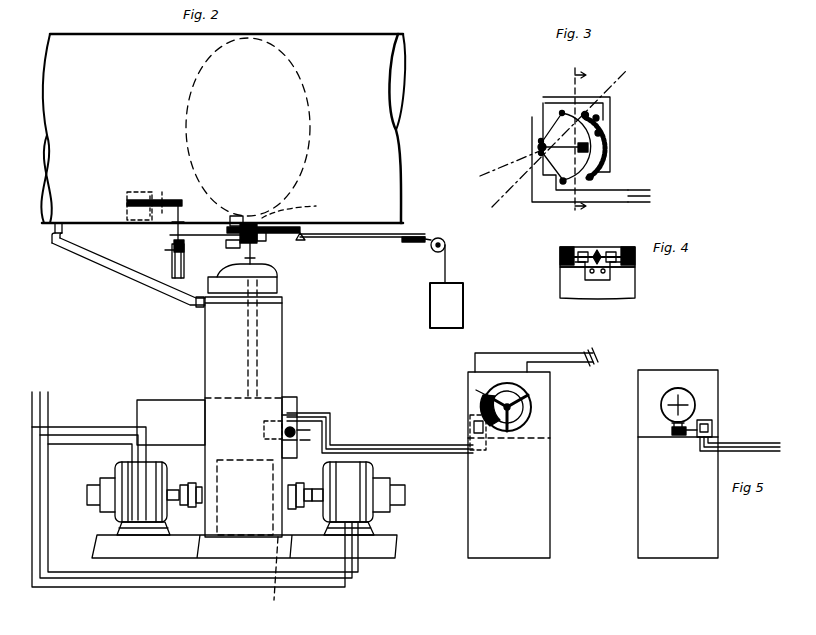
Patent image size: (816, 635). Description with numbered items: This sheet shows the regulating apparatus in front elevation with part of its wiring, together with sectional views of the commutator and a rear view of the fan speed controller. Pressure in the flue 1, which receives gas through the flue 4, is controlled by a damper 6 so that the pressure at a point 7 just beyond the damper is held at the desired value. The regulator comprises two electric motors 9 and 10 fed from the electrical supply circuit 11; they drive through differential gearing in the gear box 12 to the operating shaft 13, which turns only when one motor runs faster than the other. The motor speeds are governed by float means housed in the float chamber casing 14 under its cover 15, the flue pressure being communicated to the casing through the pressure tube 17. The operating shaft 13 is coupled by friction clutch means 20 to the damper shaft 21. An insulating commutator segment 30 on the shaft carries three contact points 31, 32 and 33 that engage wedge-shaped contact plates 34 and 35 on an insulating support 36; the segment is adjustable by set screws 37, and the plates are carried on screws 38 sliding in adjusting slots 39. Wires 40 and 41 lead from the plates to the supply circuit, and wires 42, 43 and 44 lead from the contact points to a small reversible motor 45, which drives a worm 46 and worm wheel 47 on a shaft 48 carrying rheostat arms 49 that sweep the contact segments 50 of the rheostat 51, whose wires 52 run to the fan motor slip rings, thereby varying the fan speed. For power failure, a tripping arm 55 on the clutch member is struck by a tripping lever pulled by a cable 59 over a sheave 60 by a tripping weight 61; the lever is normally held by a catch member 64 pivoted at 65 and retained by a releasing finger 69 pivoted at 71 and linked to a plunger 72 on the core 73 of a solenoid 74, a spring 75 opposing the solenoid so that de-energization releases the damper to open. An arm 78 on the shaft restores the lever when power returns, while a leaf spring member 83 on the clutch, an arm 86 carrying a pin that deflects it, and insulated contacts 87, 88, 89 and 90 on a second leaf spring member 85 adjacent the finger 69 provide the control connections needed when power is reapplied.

In FIG. 2, the flue 1 is at (55, 92).
In FIG. 3, the flue 4 is at (578, 138).
In FIG. 2, the damper 6 is at (303, 170).
In FIG. 2, the point 7 is at (55, 232).
In FIG. 2, the electric motor 9 is at (118, 475).
In FIG. 2, the electric motor 10 is at (376, 468).
In FIG. 2, the electrical supply circuit 11 is at (30, 408).
In FIG. 2, the gear box 12 is at (253, 537).
In FIG. 2, the operating shaft 13 is at (256, 257).
In FIG. 3, the operating shaft 13 is at (538, 146).
In FIG. 2, the float chamber casing 14 is at (283, 378).
In FIG. 2, the cover 15 is at (286, 286).
In FIG. 2, the pressure tube 17 is at (118, 270).
In FIG. 2, the friction clutch means 20 is at (266, 241).
In FIG. 2, the damper shaft 21 is at (299, 208).
In FIG. 3, the commutator segment 30 is at (545, 152).
In FIG. 4, the commutator segment 30 is at (604, 250).
In FIG. 3, the contact member 31 is at (560, 112).
In FIG. 3, the contact member 32 is at (568, 146).
In FIG. 4, the contact member 32 is at (595, 250).
In FIG. 3, the contact member 33 is at (563, 185).
In FIG. 3, the contact member 34 is at (586, 112).
In FIG. 4, the contact member 34 is at (560, 283).
In FIG. 3, the contact member 35 is at (594, 177).
In FIG. 4, the contact member 35 is at (620, 272).
In FIG. 2, the insulating support 36 is at (300, 413).
In FIG. 3, the insulating support 36 is at (600, 149).
In FIG. 4, the insulating support 36 is at (622, 284).
In FIG. 3, the set screws 37 is at (540, 142).
In FIG. 2, the screws 38 is at (292, 430).
In FIG. 3, the screws 38 is at (600, 117).
In FIG. 3, the adjusting slots 39 is at (600, 133).
In FIG. 4, the adjusting slots 39 is at (562, 248).
In FIG. 2, the wire 40 is at (212, 396).
In FIG. 3, the wire 40 is at (545, 100).
In FIG. 2, the wire 41 is at (180, 445).
In FIG. 3, the wire 41 is at (548, 97).
In FIG. 2, the wire 42 is at (400, 453).
In FIG. 3, the wire 42 is at (652, 202).
In FIG. 5, the wire 42 is at (762, 451).
In FIG. 2, the wire 43 is at (378, 449).
In FIG. 3, the wire 43 is at (652, 196).
In FIG. 5, the wire 43 is at (770, 446).
In FIG. 2, the wire 44 is at (352, 445).
In FIG. 3, the wire 44 is at (650, 190).
In FIG. 5, the wire 44 is at (748, 443).
In FIG. 2, the reversible motor 45 is at (470, 418).
In FIG. 5, the reversible motor 45 is at (713, 418).
In FIG. 5, the worm 46 is at (678, 436).
In FIG. 5, the worm wheel 47 is at (692, 398).
In FIG. 2, the shaft 48 is at (515, 410).
In FIG. 5, the shaft 48 is at (676, 408).
In FIG. 2, the rheostat arms 49 is at (506, 418).
In FIG. 2, the contact segments 50 is at (485, 408).
In FIG. 2, the rheostat 51 is at (527, 390).
In FIG. 2, the wires 52 is at (576, 360).
In FIG. 2, the tripping arm 55 is at (302, 229).
In FIG. 2, the cable 59 is at (374, 240).
In FIG. 2, the sheave 60 is at (446, 242).
In FIG. 2, the tripping weight 61 is at (437, 298).
In FIG. 2, the catch member 64 is at (217, 253).
In FIG. 2, the pivot 65 is at (242, 290).
In FIG. 2, the releasing finger 69 is at (176, 236).
In FIG. 2, the pivot 71 is at (183, 223).
In FIG. 2, the plunger 72 is at (170, 200).
In FIG. 2, the core 73 is at (140, 200).
In FIG. 2, the solenoid 74 is at (130, 196).
In FIG. 2, the spring 75 is at (156, 200).
In FIG. 2, the arm 78 is at (298, 241).
In FIG. 2, the leaf spring member 83 is at (241, 222).
In FIG. 2, the leaf spring member 85 is at (149, 233).
In FIG. 2, the arm 86 is at (255, 225).
In FIG. 2, the contact 87 is at (165, 249).
In FIG. 2, the contact 88 is at (172, 266).
In FIG. 2, the contact 89 is at (185, 269).
In FIG. 2, the contact 90 is at (188, 249).